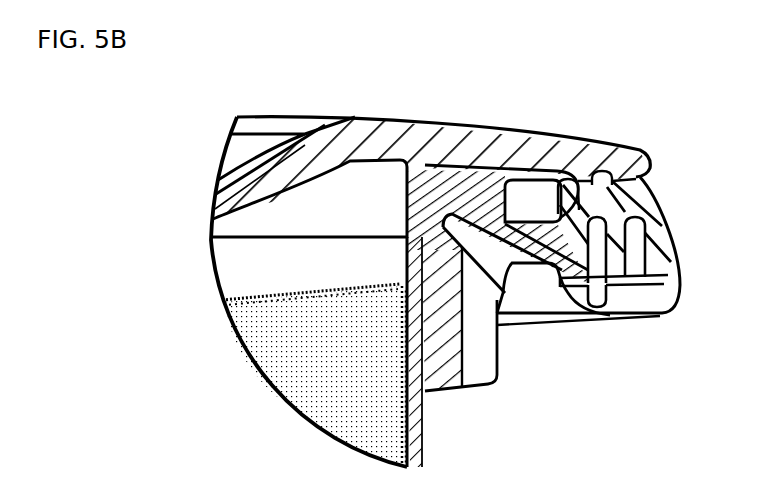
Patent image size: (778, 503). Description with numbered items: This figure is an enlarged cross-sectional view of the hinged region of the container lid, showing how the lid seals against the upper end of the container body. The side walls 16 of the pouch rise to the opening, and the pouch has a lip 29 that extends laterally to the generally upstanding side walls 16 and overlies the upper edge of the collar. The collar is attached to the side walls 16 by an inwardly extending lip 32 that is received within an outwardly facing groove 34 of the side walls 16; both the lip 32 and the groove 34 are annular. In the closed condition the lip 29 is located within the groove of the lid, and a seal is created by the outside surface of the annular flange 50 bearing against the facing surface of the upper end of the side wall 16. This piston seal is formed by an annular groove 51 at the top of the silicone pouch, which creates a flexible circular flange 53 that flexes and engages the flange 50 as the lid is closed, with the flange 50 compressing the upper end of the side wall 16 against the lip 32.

The side walls 16 is at (427, 417).
The lip 29 is at (505, 192).
The inwardly extending lip 32 is at (485, 238).
The outwardly facing groove 34 is at (407, 222).
The annular flange 50 is at (410, 185).
The annular groove 51 is at (380, 148).
The flexible circular flange 53 is at (402, 152).